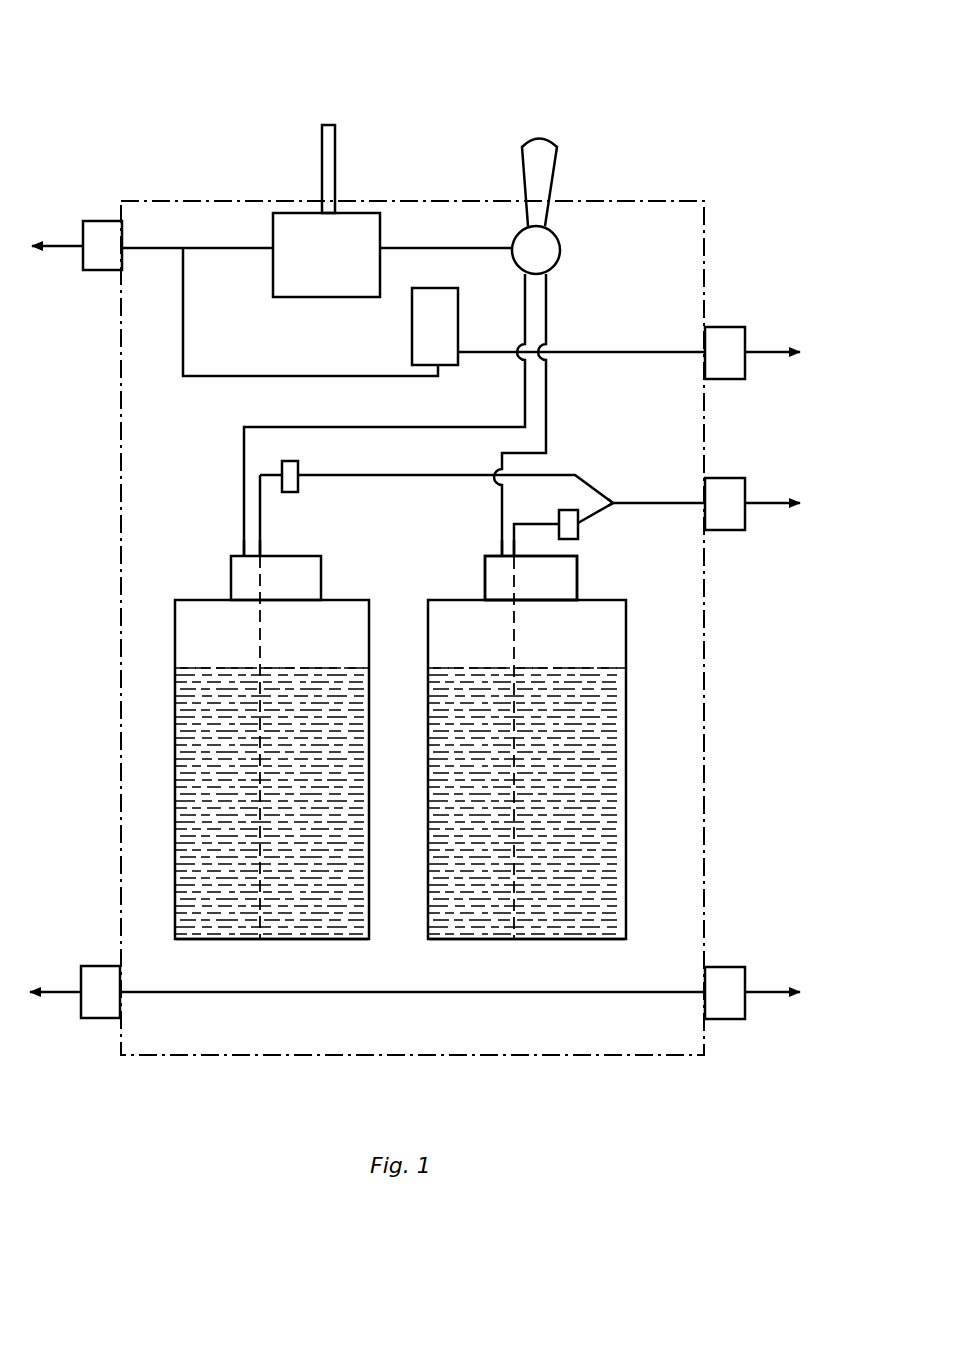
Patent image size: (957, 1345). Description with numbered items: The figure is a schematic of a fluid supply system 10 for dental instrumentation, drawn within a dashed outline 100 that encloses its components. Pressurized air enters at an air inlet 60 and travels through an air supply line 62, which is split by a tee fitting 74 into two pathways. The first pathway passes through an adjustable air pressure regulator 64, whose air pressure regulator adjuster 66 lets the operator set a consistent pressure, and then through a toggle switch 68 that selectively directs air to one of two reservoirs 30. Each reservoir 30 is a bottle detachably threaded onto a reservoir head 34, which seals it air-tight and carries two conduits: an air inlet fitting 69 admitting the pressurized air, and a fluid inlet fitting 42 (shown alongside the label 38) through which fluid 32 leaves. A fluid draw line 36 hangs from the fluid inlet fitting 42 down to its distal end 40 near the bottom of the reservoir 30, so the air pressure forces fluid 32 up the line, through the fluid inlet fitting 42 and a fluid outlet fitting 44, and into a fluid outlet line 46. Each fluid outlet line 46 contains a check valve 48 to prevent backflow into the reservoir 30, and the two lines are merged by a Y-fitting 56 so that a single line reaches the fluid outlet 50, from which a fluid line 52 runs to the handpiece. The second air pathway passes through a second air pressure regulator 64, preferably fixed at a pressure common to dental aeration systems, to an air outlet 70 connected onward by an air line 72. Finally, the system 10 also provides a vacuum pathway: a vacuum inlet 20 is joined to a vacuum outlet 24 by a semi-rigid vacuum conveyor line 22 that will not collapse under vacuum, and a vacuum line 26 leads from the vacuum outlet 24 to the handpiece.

The fluid supply system 10 is at (143, 170).
The vacuum inlet 20 is at (97, 966).
The vacuum conveyor line 22 is at (333, 995).
The vacuum outlet 24 is at (725, 967).
The vacuum line 26 is at (760, 995).
The reservoir 30 is at (175, 790).
The fluid 32 is at (225, 738).
The reservoir head 34 is at (312, 556).
The fluid draw line 36 is at (200, 698).
The tank inlet 38 is at (515, 557).
The distal end 40 is at (257, 922).
The fluid inlet fitting 42 is at (531, 578).
The fluid outlet fitting 44 is at (262, 556).
The fluid outlet line 46 is at (563, 477).
The check valve 48 is at (282, 490).
The fluid outlet 50 is at (770, 540).
The fluid line 52 is at (770, 490).
The Y-fitting 56 is at (607, 498).
The air inlet 60 is at (100, 270).
The air supply line 62 is at (500, 352).
The air pressure regulator 64 is at (285, 213).
The air pressure regulator adjuster 66 is at (322, 172).
The toggle switch 68 is at (556, 218).
The air inlet fitting 69 is at (247, 558).
The air outlet 70 is at (735, 380).
The air line 72 is at (770, 348).
The tee fitting 74 is at (182, 247).
The system enclosure 100 is at (660, 201).